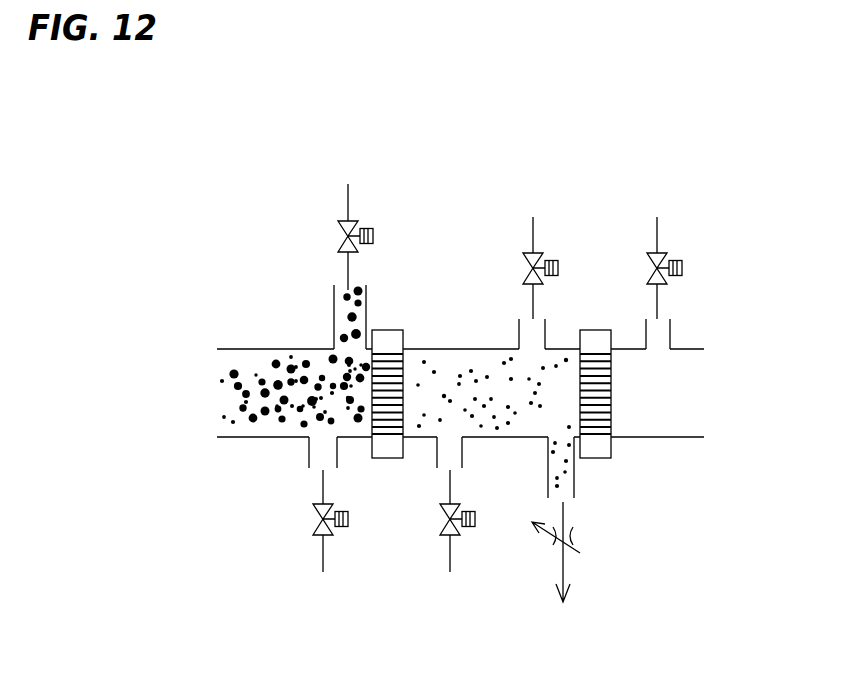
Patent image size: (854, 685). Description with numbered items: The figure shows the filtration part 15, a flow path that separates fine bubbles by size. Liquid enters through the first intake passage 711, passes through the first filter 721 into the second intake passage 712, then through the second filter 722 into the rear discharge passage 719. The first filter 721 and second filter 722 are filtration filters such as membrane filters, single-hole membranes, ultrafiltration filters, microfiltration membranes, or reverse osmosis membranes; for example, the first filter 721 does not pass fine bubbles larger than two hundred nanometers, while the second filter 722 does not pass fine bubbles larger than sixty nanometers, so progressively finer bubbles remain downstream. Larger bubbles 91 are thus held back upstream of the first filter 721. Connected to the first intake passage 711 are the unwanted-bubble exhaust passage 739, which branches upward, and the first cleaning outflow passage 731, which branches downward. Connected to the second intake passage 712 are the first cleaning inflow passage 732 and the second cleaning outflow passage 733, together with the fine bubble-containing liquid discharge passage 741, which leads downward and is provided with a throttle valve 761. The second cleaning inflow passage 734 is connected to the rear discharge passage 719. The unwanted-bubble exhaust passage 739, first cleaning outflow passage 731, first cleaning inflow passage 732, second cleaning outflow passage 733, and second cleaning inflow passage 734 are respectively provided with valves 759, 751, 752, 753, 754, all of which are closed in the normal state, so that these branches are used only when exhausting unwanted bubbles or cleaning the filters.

The filtration part 15 is at (233, 159).
The particles 91 is at (262, 428).
The first intake passage 711 is at (247, 347).
The second intake passage 712 is at (463, 347).
The rear discharge passage 719 is at (682, 440).
The first filter 721 is at (390, 460).
The second filter 722 is at (598, 460).
The first cleaning outflow passage 731 is at (307, 457).
The first cleaning inflow passage 732 is at (517, 330).
The second cleaning outflow passage 733 is at (433, 460).
The second cleaning inflow passage 734 is at (644, 330).
The unwanted-bubble exhaust passage 739 is at (333, 303).
The fine bubble-containing liquid discharge passage 741 is at (547, 480).
The valve 751 is at (317, 533).
The valve 752 is at (545, 252).
The valve 753 is at (443, 537).
The valve 754 is at (668, 252).
The valve 759 is at (338, 222).
The throttle valve 761 is at (560, 547).